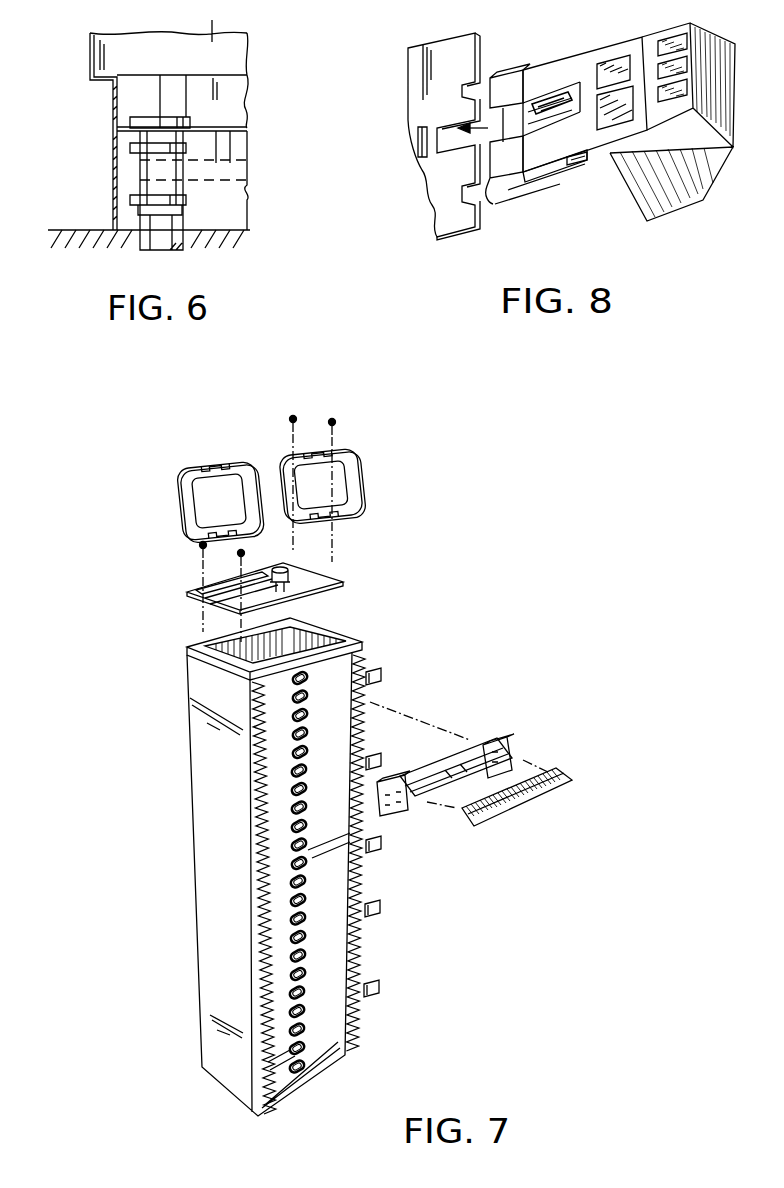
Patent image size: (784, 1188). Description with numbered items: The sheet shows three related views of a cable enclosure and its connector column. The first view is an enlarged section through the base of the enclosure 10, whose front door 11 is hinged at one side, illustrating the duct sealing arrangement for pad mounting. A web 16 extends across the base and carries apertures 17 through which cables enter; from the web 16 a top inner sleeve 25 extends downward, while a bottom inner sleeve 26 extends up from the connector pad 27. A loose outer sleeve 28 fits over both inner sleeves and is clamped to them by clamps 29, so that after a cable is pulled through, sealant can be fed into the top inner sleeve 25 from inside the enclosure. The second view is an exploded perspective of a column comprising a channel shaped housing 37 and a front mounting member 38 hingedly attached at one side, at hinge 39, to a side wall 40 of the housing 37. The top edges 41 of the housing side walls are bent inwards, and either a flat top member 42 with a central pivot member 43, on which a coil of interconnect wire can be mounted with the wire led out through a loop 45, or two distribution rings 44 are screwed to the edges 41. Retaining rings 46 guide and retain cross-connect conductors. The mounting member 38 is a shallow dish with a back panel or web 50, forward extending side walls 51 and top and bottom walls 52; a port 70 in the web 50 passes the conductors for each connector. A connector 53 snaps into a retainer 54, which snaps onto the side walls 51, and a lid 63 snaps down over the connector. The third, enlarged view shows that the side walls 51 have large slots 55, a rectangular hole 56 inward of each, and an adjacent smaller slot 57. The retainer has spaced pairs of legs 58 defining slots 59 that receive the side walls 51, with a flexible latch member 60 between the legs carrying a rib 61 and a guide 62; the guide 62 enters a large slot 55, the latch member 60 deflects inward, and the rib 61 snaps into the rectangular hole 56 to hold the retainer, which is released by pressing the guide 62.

In FIG. 6, the enclosure 10 is at (245, 35).
In FIG. 6, the door 11 is at (88, 56).
In FIG. 6, the web 16 is at (212, 128).
In FIG. 6, the apertures 17 is at (150, 117).
In FIG. 6, the top inner sleeve 25 is at (235, 160).
In FIG. 6, the bottom inner sleeve 26 is at (187, 222).
In FIG. 6, the connector pad 27 is at (230, 240).
In FIG. 6, the outer sleeve 28 is at (190, 182).
In FIG. 6, the clamps 29 is at (130, 147).
In FIG. 7, the housing 37 is at (187, 682).
In FIG. 7, the mounting member 38 is at (253, 700).
In FIG. 7, the hinge 39 is at (365, 640).
In FIG. 7, the side wall 40 is at (340, 640).
In FIG. 7, the top edges 41 is at (217, 655).
In FIG. 7, the top member 42 is at (320, 575).
In FIG. 7, the pivot member 43 is at (196, 592).
In FIG. 7, the distribution rings 44 is at (180, 495).
In FIG. 7, the loop 45 is at (238, 607).
In FIG. 7, the retaining rings 46 is at (382, 681).
In FIG. 7, the web 50 is at (320, 885).
In FIG. 8, the side walls 51 is at (418, 72).
In FIG. 7, the side walls 51 is at (253, 897).
In FIG. 7, the top and bottom walls 52 is at (368, 650).
In FIG. 7, the connector 53 is at (575, 771).
In FIG. 7, the retainer 54 is at (522, 741).
In FIG. 8, the large slots 55 is at (450, 143).
In FIG. 7, the large slots 55 is at (258, 975).
In FIG. 8, the rectangular hole 56 is at (418, 135).
In FIG. 7, the rectangular hole 56 is at (258, 950).
In FIG. 8, the smaller slot 57 is at (462, 89).
In FIG. 7, the smaller slot 57 is at (256, 930).
In FIG. 8, the legs 58 is at (493, 78).
In FIG. 7, the legs 58 is at (385, 803).
In FIG. 8, the slots 59 is at (572, 75).
In FIG. 8, the latch member 60 is at (522, 104).
In FIG. 8, the rib 61 is at (527, 178).
In FIG. 8, the guide 62 is at (542, 108).
In FIG. 7, the lid 63 is at (517, 755).
In FIG. 7, the port 70 is at (292, 758).